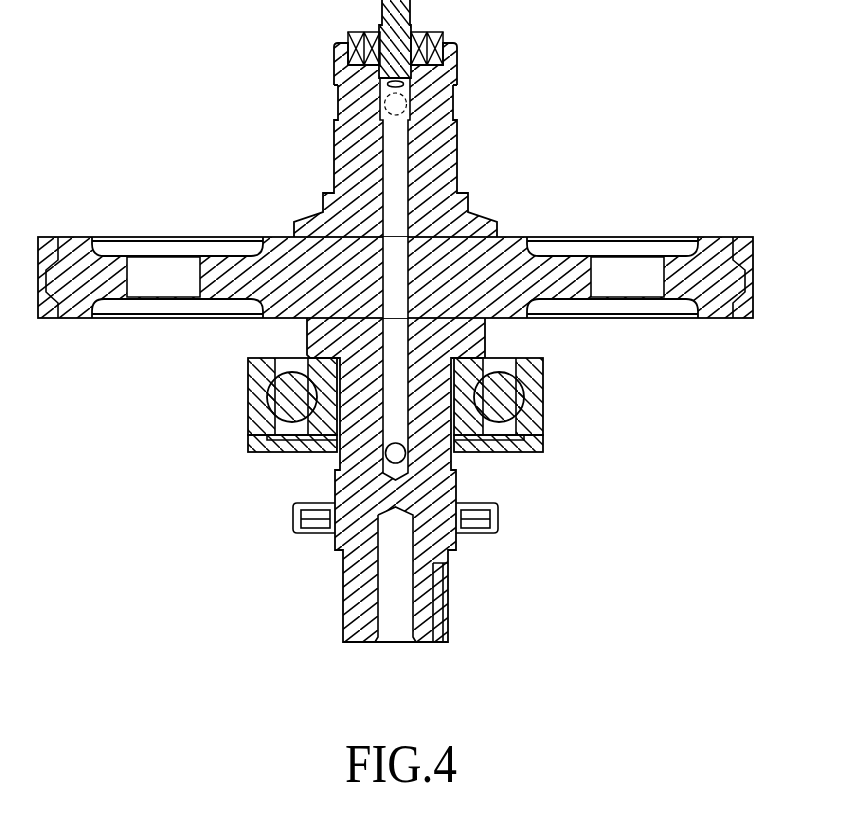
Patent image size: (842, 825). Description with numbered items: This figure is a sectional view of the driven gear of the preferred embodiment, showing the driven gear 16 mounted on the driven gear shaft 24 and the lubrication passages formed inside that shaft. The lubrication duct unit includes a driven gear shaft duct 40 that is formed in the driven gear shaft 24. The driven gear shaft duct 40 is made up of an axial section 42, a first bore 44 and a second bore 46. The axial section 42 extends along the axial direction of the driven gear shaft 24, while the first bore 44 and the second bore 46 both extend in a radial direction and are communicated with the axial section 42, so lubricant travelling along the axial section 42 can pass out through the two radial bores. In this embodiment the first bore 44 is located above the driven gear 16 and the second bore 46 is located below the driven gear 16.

The driven gear 16 is at (722, 237).
The driven gear shaft 24 is at (353, 373).
The driven gear shaft duct 40 is at (404, 212).
The axial section 42 is at (390, 320).
The first bore 44 is at (387, 92).
The second bore 46 is at (400, 457).